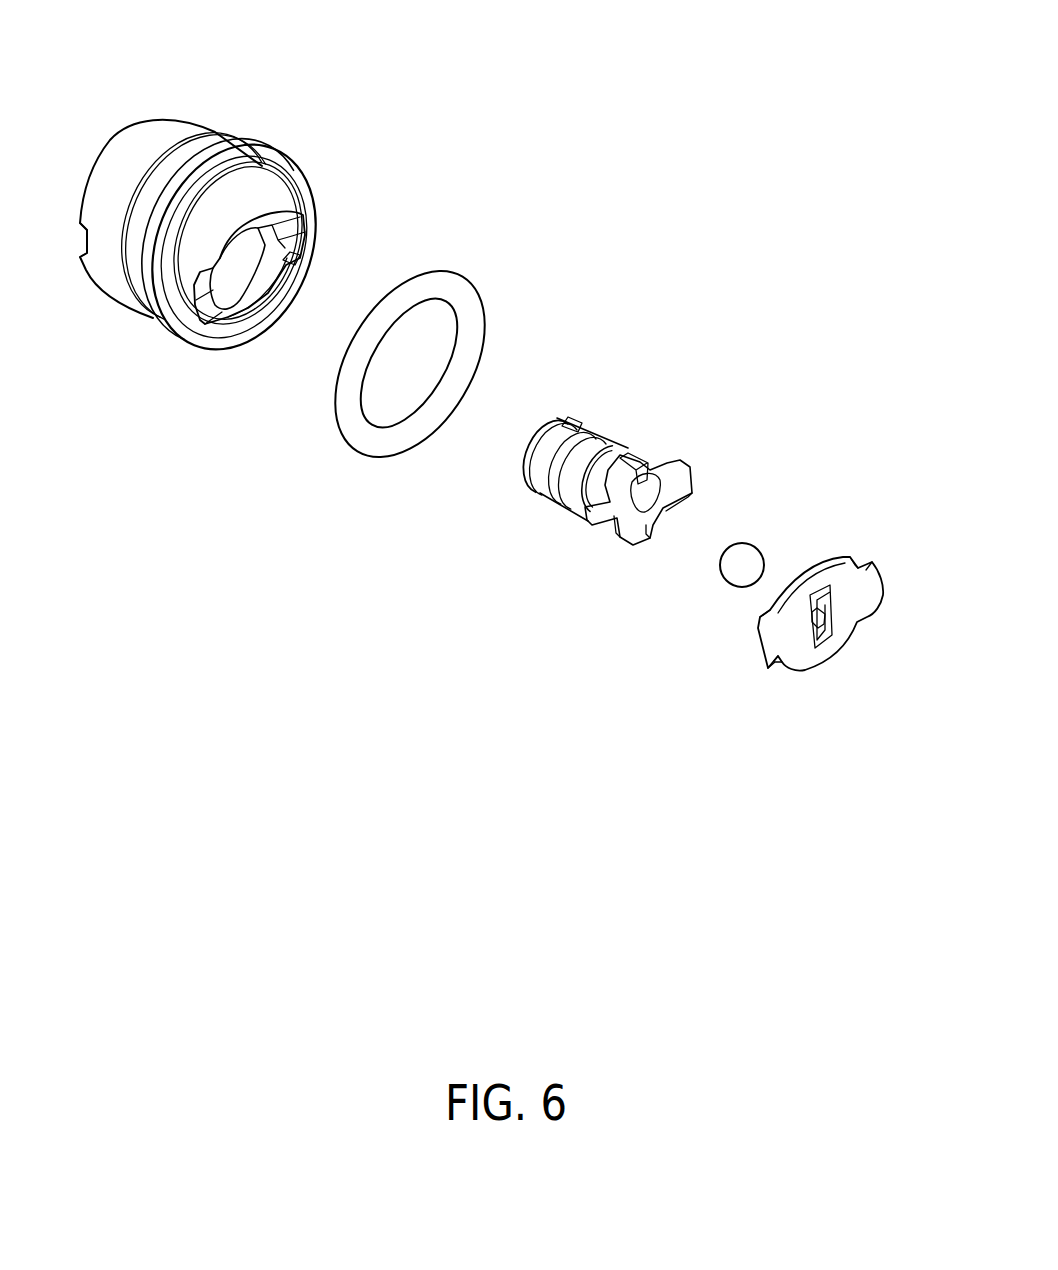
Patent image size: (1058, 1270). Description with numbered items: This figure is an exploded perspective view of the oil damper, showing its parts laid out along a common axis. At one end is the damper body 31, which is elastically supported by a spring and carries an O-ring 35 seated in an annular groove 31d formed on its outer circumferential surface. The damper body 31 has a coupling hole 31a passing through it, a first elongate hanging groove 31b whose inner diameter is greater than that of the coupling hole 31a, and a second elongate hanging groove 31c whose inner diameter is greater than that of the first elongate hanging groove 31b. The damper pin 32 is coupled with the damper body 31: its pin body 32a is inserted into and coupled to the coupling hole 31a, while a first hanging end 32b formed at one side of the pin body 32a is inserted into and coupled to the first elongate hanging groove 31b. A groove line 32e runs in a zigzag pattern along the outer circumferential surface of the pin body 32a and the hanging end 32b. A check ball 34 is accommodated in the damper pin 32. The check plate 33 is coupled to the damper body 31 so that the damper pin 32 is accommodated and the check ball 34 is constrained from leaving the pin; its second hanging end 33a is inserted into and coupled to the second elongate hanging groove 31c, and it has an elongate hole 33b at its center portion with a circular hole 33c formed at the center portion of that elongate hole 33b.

The damper body 31 is at (222, 219).
The coupling hole 31a is at (235, 252).
The first elongate hanging groove 31b is at (270, 236).
The second elongate hanging groove 31c is at (296, 251).
The annular groove 31d is at (150, 250).
The damper pin 32 is at (601, 465).
The pin body 32a is at (567, 502).
The first hanging end 32b is at (588, 540).
The groove line 32e is at (634, 462).
The check plate 33 is at (820, 589).
The second hanging end 33a is at (757, 650).
The elongate hole 33b is at (825, 632).
The circular hole 33c is at (826, 612).
The check ball 34 is at (772, 527).
The O-ring 35 is at (499, 242).